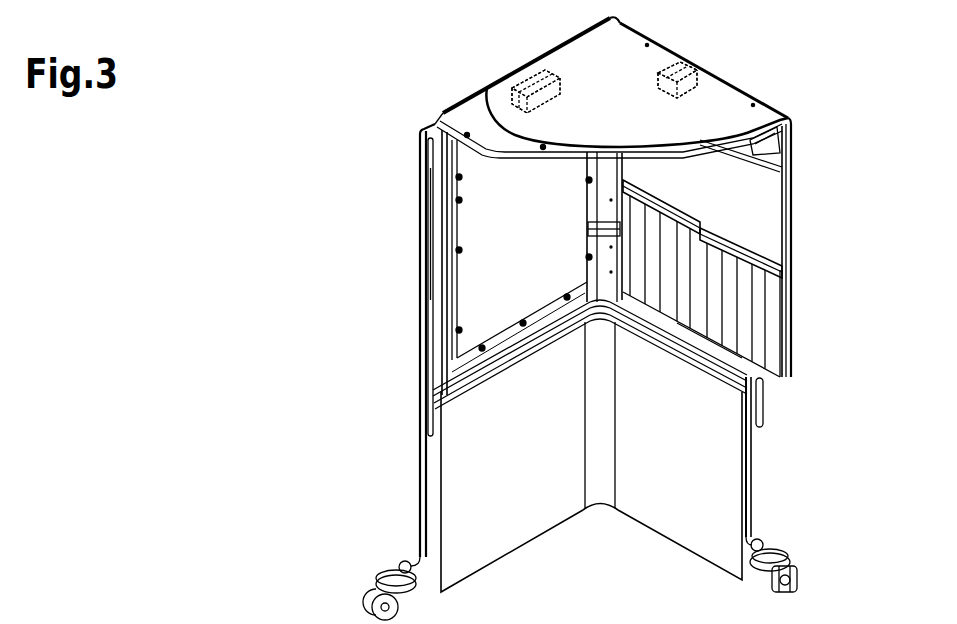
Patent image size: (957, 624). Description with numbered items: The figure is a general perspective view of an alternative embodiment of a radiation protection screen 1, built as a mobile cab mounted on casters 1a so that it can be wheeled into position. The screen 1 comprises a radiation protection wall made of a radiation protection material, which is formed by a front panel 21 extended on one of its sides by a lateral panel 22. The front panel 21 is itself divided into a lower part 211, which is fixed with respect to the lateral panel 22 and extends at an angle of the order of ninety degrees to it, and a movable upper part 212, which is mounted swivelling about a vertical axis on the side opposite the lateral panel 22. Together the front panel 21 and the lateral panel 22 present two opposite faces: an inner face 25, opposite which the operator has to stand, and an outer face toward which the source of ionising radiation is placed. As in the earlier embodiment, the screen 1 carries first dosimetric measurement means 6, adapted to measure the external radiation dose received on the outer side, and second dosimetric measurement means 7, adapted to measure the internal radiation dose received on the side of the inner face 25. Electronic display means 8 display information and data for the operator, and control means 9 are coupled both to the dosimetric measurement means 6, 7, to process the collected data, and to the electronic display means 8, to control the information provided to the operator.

The screen 1 is at (822, 138).
The casters 1a is at (383, 570).
The first dosimetric measurement means 6 is at (532, 63).
The second dosimetric measurement means 7 is at (518, 64).
The electronic display means 8 is at (670, 60).
The control means 9 is at (698, 49).
The front panel 21 is at (800, 267).
The lower part 211 is at (760, 458).
The upper part 212 is at (793, 225).
The lateral panel 22 is at (415, 273).
The inner face 25 is at (663, 468).